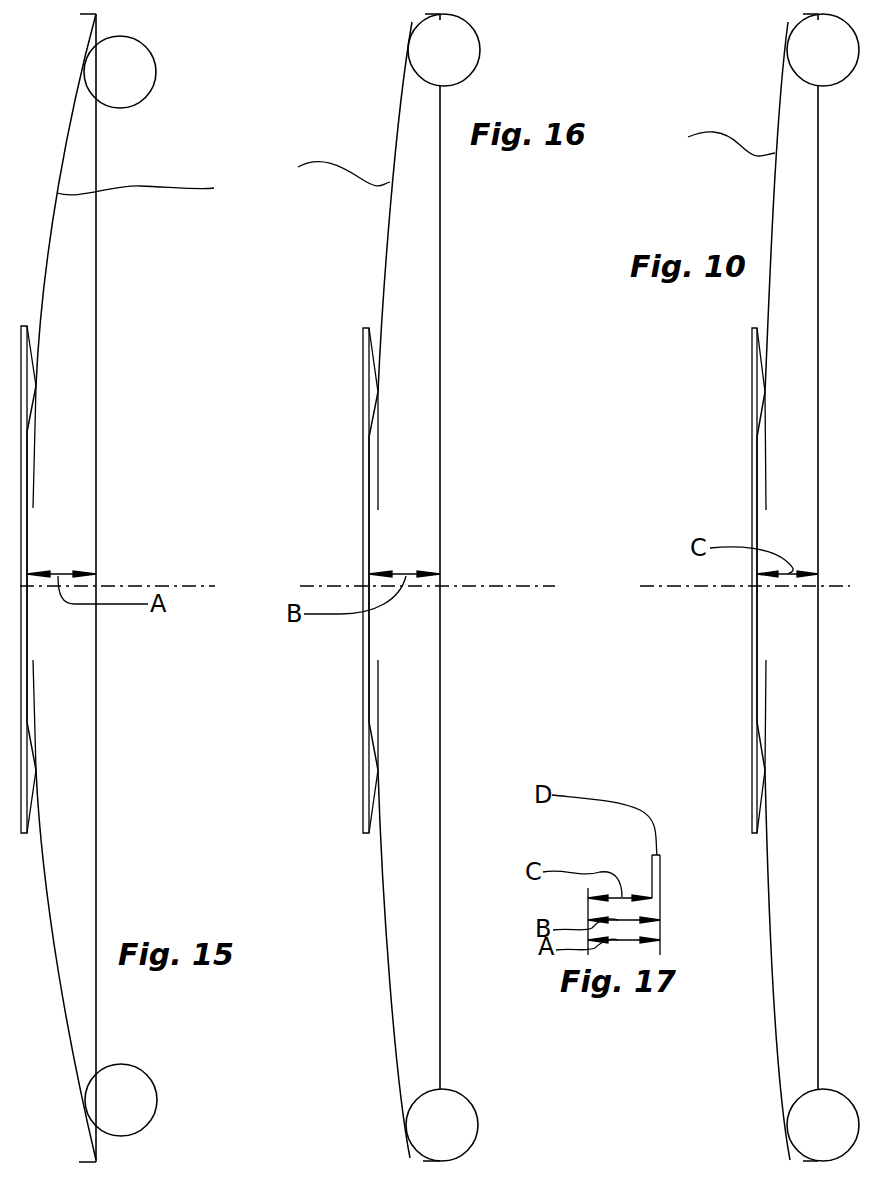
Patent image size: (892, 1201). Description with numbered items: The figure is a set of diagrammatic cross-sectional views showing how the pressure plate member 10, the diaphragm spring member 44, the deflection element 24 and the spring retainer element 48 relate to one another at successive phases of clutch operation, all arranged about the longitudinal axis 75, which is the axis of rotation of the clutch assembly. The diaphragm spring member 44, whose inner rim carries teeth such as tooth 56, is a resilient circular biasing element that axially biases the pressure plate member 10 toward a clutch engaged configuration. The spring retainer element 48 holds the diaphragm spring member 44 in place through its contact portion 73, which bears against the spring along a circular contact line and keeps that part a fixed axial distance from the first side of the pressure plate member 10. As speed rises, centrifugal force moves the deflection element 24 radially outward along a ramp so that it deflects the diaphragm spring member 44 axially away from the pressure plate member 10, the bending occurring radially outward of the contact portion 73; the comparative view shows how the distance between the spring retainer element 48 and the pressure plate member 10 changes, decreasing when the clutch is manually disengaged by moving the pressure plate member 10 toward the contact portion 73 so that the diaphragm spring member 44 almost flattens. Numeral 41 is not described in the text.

In FIG. 15, the pressure plate member 10 is at (96, 343).
In FIG. 16, the pressure plate member 10 is at (440, 333).
In FIG. 10, the pressure plate member 10 is at (818, 448).
In FIG. 15, the deflection element 24 is at (156, 58).
In FIG. 16, the deflection element 24 is at (480, 42).
In FIG. 10, the deflection element 24 is at (795, 15).
In FIG. 15, the yarn 41 is at (85, 1107).
In FIG. 16, the yarn 41 is at (405, 45).
In FIG. 10, the yarn 41 is at (785, 1128).
In FIG. 15, the diaphragm spring member 44 is at (155, 188).
In FIG. 16, the diaphragm spring member 44 is at (331, 170).
In FIG. 10, the diaphragm spring member 44 is at (716, 141).
In FIG. 15, the spring retainer element 48 is at (22, 570).
In FIG. 16, the spring retainer element 48 is at (369, 548).
In FIG. 10, the spring retainer element 48 is at (752, 623).
In FIG. 15, the tooth 56 is at (33, 690).
In FIG. 16, the tooth 56 is at (376, 700).
In FIG. 10, the tooth 56 is at (766, 700).
In FIG. 15, the contact portion 73 is at (36, 386).
In FIG. 16, the contact portion 73 is at (378, 392).
In FIG. 10, the contact portion 73 is at (765, 392).
In FIG. 15, the longitudinal axis 75 is at (185, 594).
In FIG. 16, the longitudinal axis 75 is at (343, 585).
In FIG. 10, the longitudinal axis 75 is at (658, 585).